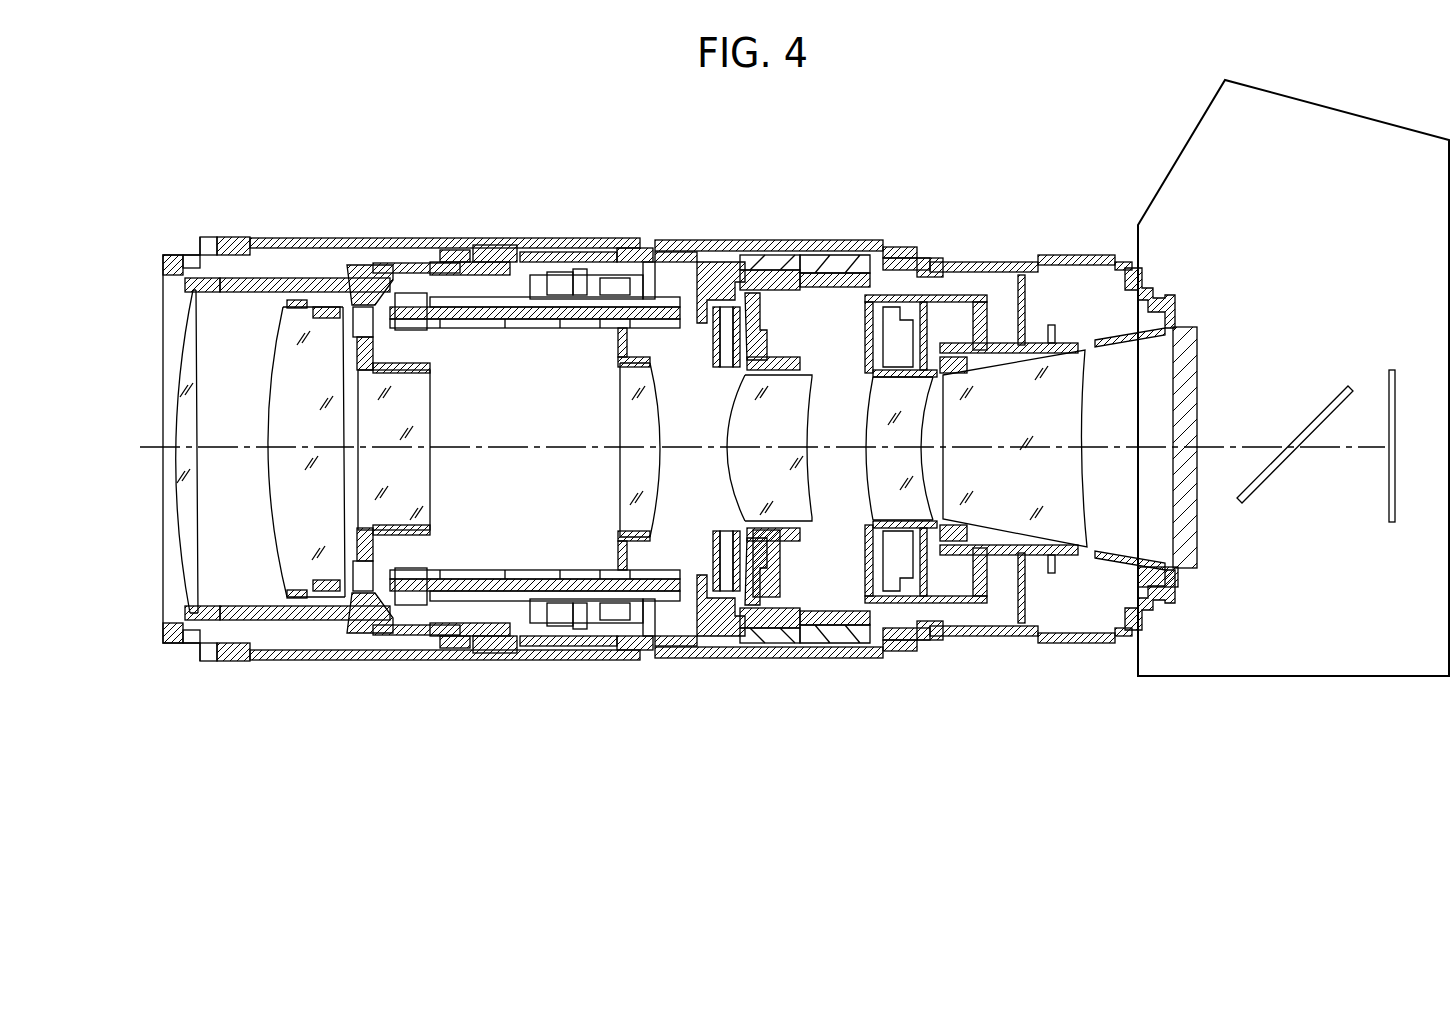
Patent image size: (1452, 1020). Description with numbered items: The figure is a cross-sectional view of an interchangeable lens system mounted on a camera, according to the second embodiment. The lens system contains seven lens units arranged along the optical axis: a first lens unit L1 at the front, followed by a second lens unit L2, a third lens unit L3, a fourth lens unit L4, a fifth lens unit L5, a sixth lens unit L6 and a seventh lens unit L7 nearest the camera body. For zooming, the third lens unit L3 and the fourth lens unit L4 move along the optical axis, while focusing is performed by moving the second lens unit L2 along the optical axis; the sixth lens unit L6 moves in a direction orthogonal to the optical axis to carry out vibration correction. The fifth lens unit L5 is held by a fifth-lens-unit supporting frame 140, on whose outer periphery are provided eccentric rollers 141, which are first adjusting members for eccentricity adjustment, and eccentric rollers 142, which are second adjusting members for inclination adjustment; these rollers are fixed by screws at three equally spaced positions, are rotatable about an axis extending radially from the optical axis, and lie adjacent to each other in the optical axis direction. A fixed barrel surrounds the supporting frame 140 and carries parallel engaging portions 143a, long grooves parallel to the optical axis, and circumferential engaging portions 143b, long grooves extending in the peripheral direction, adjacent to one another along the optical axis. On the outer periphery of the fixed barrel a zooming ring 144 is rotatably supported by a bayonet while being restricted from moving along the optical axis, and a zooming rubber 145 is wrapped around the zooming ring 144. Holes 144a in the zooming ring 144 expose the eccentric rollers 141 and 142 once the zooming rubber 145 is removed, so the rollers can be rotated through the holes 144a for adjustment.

The first lens unit L1 is at (183, 438).
The second lens unit L2 is at (285, 428).
The third lens unit L3 is at (420, 405).
The fourth lens unit L4 is at (625, 433).
The fifth lens unit L5 is at (728, 428).
The sixth lens unit L6 is at (878, 467).
The seventh lens unit L7 is at (1070, 407).
The fifth-lens-unit supporting frame 140 is at (777, 577).
The eccentric rollers 141 is at (753, 295).
The eccentric rollers 142 is at (790, 262).
The parallel engaging portions 143a is at (773, 295).
The circumferential engaging portions 143b is at (815, 268).
The zooming ring 144 is at (903, 252).
The holes 144a is at (790, 265).
The zooming rubber 145 is at (687, 242).